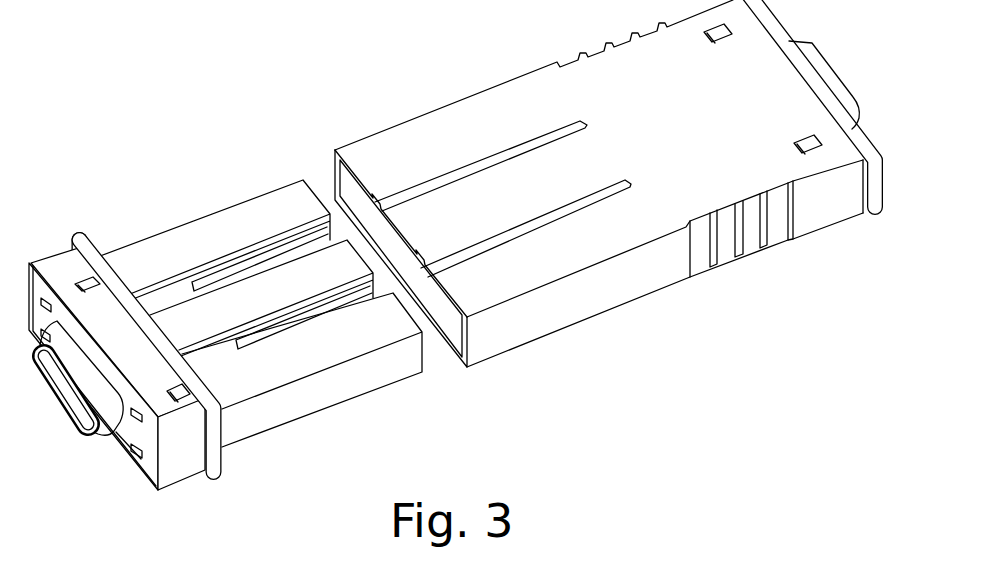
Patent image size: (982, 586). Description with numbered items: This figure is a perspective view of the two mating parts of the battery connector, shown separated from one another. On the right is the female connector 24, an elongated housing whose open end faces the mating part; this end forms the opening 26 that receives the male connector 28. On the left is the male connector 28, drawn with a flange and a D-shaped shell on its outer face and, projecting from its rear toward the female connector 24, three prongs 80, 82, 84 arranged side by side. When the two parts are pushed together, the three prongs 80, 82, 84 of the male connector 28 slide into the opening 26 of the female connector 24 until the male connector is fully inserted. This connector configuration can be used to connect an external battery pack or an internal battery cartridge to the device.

The female connector 24 is at (583, 183).
The opening 26 is at (344, 178).
The male connector 28 is at (226, 315).
The prong 80 is at (262, 203).
The prong 82 is at (301, 297).
The prong 84 is at (383, 382).